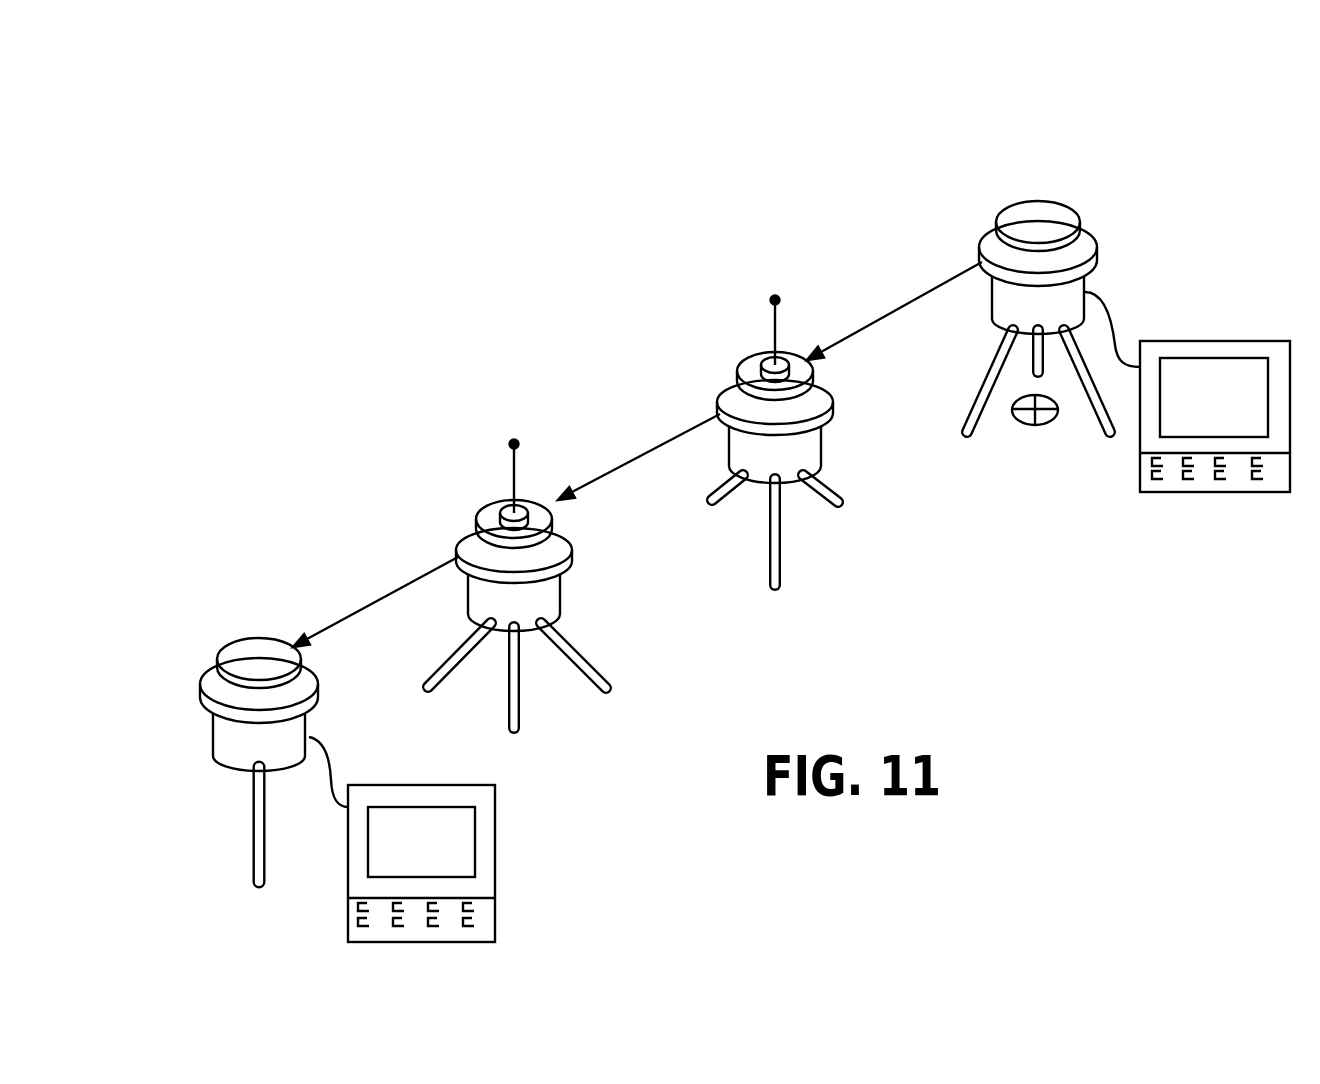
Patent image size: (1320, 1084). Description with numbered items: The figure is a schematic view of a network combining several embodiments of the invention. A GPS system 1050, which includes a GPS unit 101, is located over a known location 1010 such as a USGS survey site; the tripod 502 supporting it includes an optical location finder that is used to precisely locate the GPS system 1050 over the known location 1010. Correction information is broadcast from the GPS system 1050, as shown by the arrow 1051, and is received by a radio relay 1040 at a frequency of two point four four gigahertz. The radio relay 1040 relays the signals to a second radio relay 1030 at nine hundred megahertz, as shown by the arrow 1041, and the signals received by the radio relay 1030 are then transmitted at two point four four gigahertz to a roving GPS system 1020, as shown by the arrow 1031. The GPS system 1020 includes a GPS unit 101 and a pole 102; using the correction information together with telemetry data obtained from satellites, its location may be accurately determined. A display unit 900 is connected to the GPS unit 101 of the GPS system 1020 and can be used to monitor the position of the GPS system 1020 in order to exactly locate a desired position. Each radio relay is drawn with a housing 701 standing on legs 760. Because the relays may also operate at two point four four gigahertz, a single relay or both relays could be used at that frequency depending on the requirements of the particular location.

The GPS system 1050 is at (784, 160).
The GPS unit 101 is at (1057, 223).
The pole 102 is at (248, 840).
The tripod 502 is at (992, 372).
The known location 1010 is at (1020, 422).
The display unit 900 is at (1202, 341).
The arrow 1051 is at (904, 296).
The radio relay 1040 is at (758, 352).
The arrow 1041 is at (622, 462).
The radio relay 1030 is at (500, 502).
The arrow 1031 is at (405, 548).
The relay housing 701 is at (867, 454).
The relay legs 760 is at (768, 538).
The GPS system 1020 is at (255, 640).